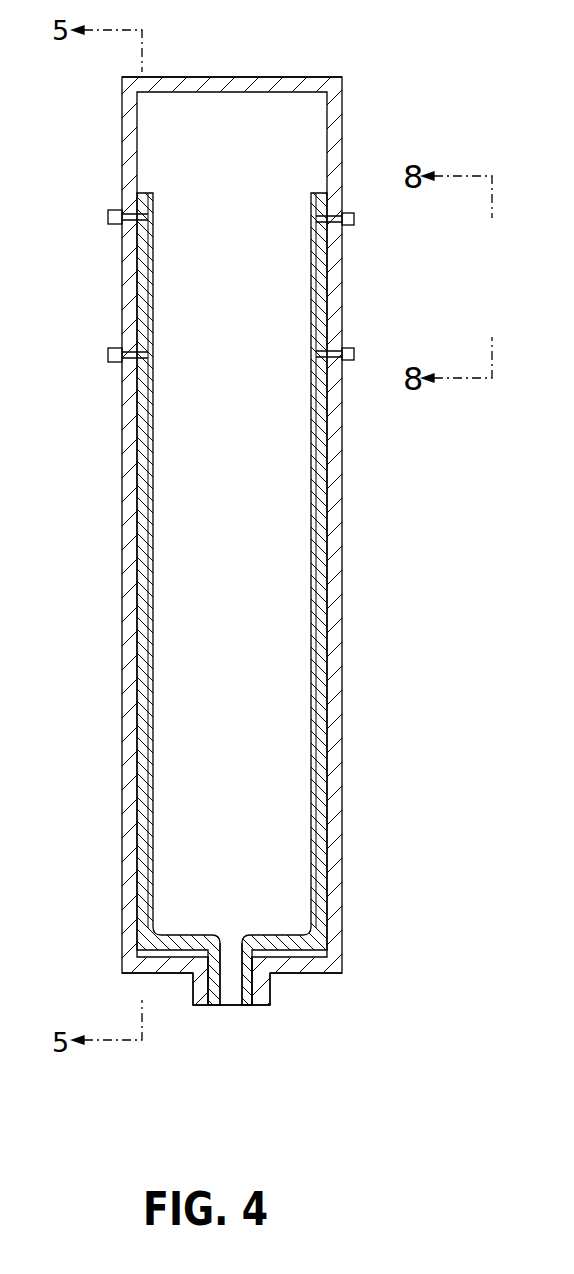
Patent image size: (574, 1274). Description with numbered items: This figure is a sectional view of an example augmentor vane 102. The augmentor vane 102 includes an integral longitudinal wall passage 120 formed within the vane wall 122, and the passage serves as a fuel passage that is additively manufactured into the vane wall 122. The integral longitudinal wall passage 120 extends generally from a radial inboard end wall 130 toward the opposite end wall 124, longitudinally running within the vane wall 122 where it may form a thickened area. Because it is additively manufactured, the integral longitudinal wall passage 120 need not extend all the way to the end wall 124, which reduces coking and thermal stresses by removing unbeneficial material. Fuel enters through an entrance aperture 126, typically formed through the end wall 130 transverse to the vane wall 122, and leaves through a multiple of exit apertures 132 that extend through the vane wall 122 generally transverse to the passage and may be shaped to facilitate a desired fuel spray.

The augmentor vane 102 is at (294, 544).
The integral longitudinal wall passage 120 is at (341, 662).
The vane wall 122 is at (341, 600).
The end wall 124 is at (243, 76).
The entrance aperture 126 is at (247, 1006).
The radial inboard end wall 130 is at (298, 974).
The exit apertures 132 is at (367, 355).